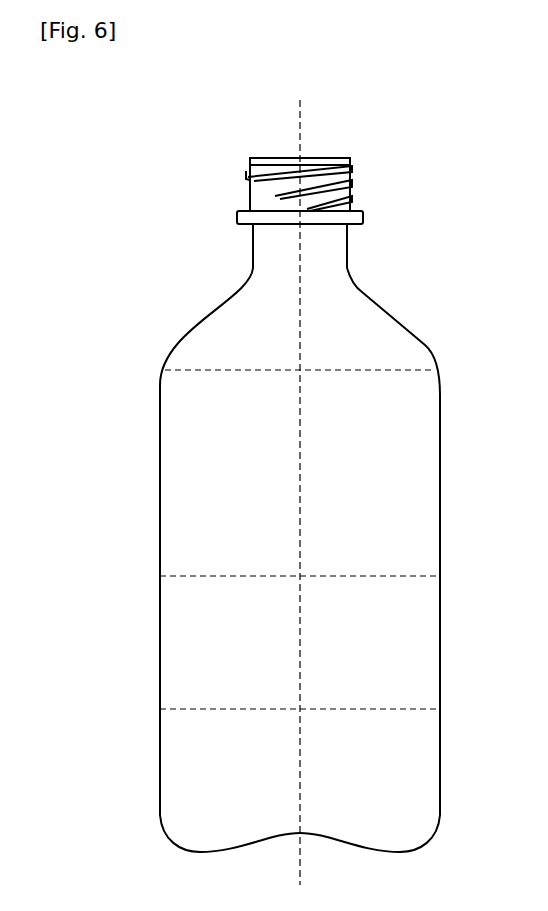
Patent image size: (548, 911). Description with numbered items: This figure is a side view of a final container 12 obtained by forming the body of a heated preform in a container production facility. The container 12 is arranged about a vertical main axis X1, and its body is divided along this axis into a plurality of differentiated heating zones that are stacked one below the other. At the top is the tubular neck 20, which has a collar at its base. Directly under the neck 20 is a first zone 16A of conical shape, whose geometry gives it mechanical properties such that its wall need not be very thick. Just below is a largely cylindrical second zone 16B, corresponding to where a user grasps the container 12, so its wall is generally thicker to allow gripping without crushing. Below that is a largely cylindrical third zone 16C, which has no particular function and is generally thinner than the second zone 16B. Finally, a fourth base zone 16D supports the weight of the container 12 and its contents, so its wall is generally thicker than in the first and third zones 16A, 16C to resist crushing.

The main axis X1 is at (300, 122).
The final container 12 is at (251, 488).
The neck 20 is at (247, 190).
The first zone 16A is at (250, 328).
The second zone 16B is at (225, 503).
The third zone 16C is at (225, 632).
The fourth base zone 16D is at (228, 762).